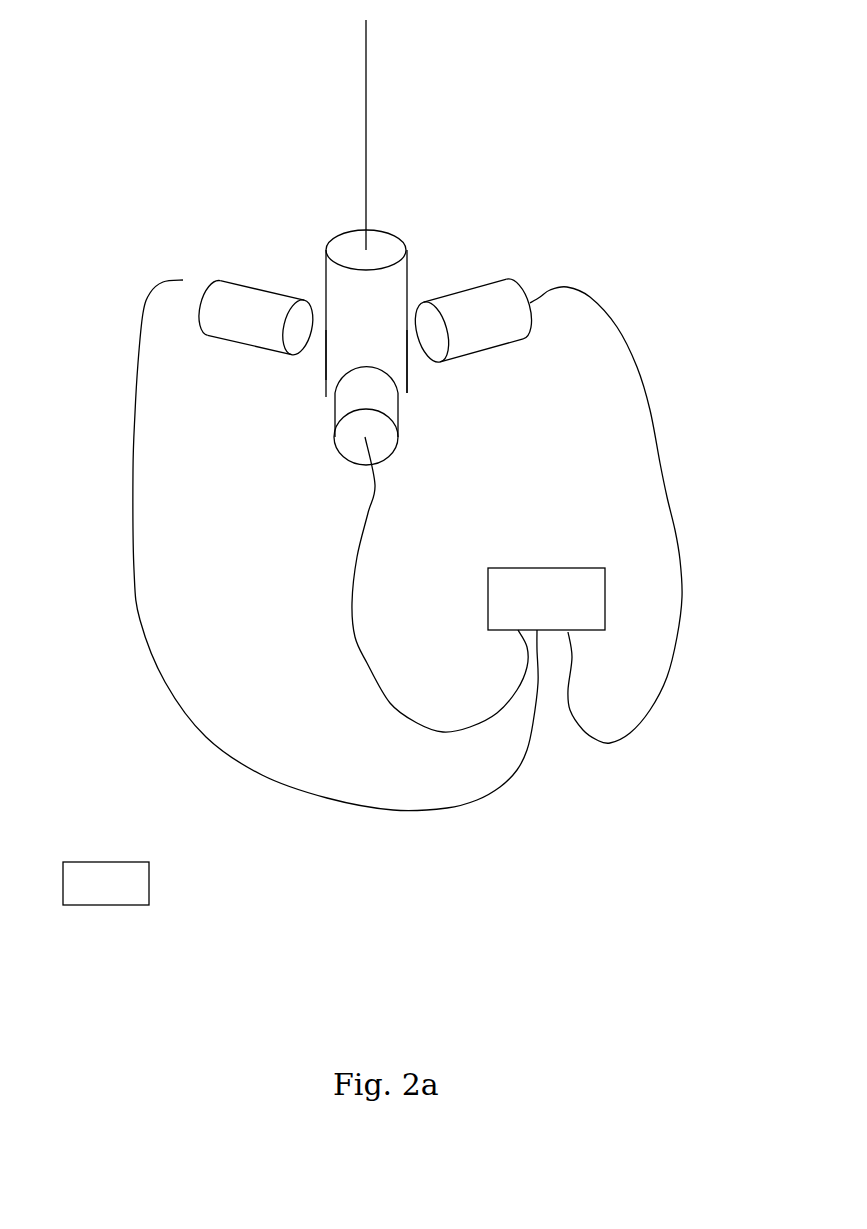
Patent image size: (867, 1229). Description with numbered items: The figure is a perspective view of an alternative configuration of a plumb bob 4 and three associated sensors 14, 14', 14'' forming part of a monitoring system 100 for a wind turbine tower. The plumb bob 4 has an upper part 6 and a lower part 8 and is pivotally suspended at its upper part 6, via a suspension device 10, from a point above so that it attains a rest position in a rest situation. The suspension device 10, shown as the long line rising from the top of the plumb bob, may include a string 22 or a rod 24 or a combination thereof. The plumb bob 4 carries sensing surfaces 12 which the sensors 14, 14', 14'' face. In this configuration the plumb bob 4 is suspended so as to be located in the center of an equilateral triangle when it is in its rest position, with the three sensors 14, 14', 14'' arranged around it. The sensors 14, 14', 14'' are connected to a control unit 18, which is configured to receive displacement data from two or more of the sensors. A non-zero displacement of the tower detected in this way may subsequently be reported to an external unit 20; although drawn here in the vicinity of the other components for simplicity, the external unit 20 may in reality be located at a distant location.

The system 100 is at (557, 125).
The suspension device 10 is at (427, 135).
The string 22 is at (427, 135).
The rod 24 is at (367, 53).
The upper part 6 is at (407, 268).
The lower part 8 is at (388, 350).
The sensing surfaces 12 is at (326, 340).
The plumb bob 4 is at (326, 365).
The sensor 14 is at (256, 274).
The sensor 14' is at (325, 416).
The sensor 14'' is at (486, 296).
The control unit 18 is at (552, 568).
The external unit 20 is at (130, 882).